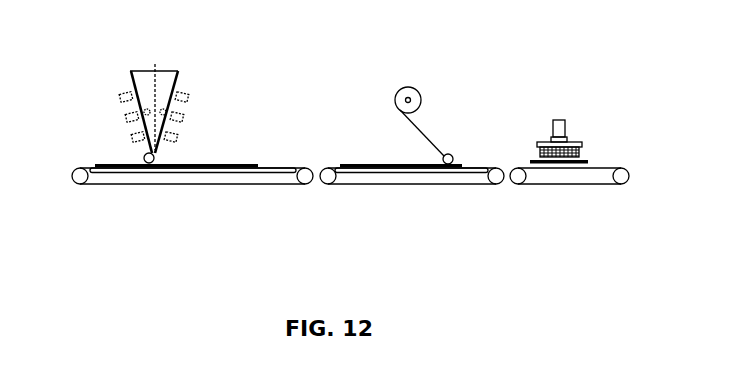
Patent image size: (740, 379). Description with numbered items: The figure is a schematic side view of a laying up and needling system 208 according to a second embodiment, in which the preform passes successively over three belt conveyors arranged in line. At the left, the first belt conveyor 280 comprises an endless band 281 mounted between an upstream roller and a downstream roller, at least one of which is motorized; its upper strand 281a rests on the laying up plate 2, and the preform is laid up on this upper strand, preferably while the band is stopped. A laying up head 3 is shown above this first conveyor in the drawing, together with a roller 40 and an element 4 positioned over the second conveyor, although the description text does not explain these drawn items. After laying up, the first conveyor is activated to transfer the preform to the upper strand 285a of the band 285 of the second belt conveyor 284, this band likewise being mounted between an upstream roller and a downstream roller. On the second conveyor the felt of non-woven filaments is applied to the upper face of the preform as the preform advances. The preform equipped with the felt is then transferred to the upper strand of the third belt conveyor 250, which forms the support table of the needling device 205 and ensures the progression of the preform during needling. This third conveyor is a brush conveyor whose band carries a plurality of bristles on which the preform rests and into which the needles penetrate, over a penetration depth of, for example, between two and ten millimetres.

The laying up plate 2 is at (228, 172).
The hopper 3 is at (150, 70).
The tape 4 is at (437, 145).
The tape roll 40 is at (414, 88).
The needling device 205 is at (563, 111).
The laying up and needling system 208 is at (302, 82).
The third belt conveyor 250 is at (577, 189).
The first belt conveyor 280 is at (178, 189).
The endless band 281 is at (105, 186).
The upper strand 281a is at (88, 166).
The second belt conveyor 284 is at (427, 189).
The band 285 is at (370, 188).
The upper strand 285a is at (334, 163).